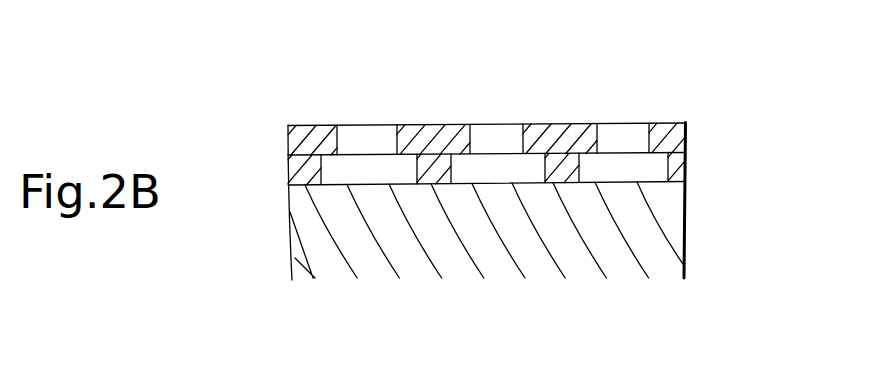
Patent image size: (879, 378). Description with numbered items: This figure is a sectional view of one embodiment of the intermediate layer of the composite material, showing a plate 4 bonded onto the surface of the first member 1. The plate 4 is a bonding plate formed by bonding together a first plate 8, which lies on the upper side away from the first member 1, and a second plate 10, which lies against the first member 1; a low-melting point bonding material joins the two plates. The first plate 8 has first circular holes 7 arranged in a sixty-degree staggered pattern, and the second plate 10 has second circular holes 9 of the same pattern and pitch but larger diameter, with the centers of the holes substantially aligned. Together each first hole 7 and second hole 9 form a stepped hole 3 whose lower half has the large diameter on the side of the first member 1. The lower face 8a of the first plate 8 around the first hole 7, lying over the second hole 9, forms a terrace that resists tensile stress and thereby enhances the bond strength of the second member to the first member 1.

The first member 1 is at (652, 243).
The hole 3 is at (665, 54).
The plate 4 is at (750, 97).
The first circular hole 7 is at (617, 132).
The first plate 8 is at (678, 141).
The lower face of the first plate 8a is at (536, 160).
The second circular hole 9 is at (622, 170).
The second plate 10 is at (672, 170).